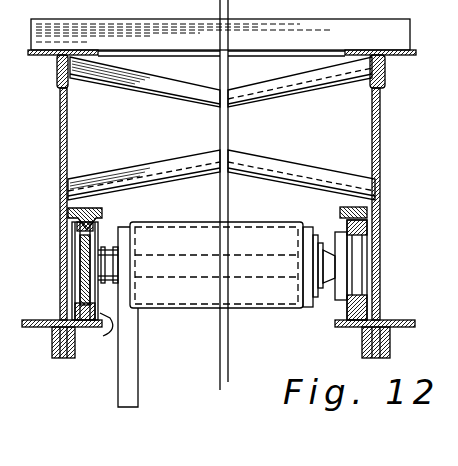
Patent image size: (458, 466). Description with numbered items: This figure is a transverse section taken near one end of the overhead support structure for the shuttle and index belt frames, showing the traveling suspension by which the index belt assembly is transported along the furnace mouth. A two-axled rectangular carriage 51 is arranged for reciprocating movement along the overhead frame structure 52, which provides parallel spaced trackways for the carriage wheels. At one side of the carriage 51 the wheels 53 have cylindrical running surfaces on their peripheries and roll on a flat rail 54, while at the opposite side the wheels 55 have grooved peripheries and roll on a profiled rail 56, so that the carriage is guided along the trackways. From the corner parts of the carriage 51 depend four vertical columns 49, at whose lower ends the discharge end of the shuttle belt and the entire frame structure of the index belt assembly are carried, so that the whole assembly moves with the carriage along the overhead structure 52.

The vertical column 49 is at (132, 350).
The carriage 51 is at (193, 215).
The overhead frame structure 52 is at (60, 133).
The wheel 53 is at (367, 232).
The flat rail 54 is at (338, 310).
The wheel 55 is at (72, 251).
The profiled rail 56 is at (96, 335).